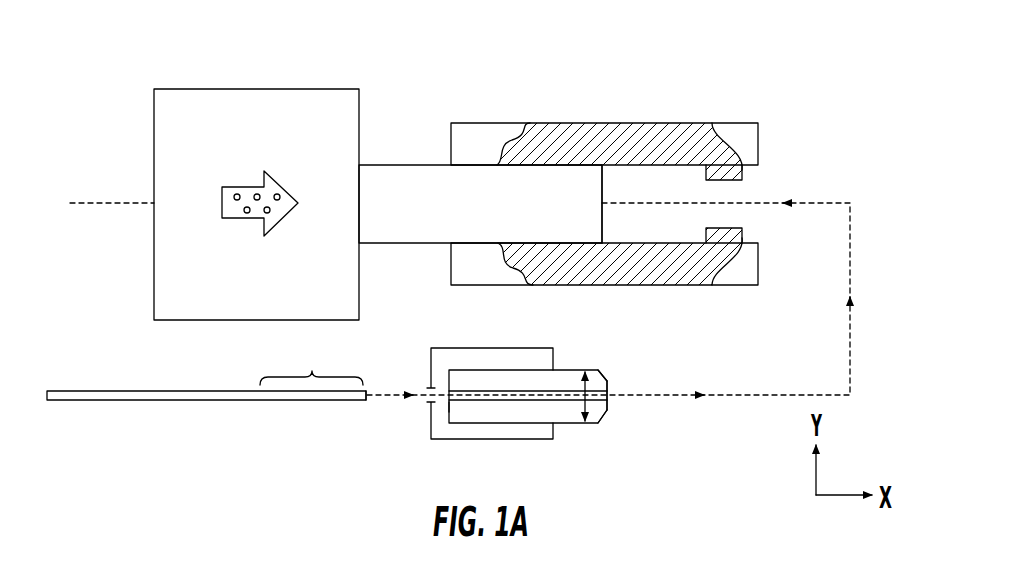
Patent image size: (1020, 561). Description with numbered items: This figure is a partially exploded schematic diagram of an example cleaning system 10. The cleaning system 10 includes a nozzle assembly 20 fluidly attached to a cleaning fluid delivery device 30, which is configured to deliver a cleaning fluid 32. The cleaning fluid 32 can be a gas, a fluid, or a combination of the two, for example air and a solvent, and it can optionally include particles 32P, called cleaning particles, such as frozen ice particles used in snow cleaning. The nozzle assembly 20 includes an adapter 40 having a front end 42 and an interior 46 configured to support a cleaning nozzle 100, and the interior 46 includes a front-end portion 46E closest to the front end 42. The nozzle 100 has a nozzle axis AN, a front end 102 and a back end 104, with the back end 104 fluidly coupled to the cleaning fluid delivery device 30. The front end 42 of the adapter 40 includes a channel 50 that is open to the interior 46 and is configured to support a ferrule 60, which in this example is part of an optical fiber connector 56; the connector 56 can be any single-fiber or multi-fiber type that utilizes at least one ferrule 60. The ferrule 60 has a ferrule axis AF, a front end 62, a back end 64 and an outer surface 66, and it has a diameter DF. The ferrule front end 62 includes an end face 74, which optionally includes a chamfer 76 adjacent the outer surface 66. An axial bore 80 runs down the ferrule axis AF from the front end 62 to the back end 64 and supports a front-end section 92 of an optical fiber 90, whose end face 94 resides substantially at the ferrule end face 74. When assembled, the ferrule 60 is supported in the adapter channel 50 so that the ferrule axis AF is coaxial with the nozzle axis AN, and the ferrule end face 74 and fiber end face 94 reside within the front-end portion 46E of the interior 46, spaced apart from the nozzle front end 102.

The cleaning system 10 is at (134, 44).
The nozzle assembly 20 is at (508, 55).
The cleaning fluid delivery device 30 is at (248, 90).
The cleaning fluid 32 is at (242, 187).
The particles 32P is at (246, 213).
The adapter 40 is at (517, 123).
The front end 42 is at (760, 135).
The interior 46 is at (643, 183).
The front-end portion 46E is at (666, 230).
The channel 50 is at (745, 192).
The optical fiber connector 56 is at (468, 347).
The ferrule 60 is at (517, 361).
The front end 62 is at (617, 383).
The back end 64 is at (449, 412).
The outer surface 66 is at (532, 440).
The end face 74 is at (605, 417).
The chamfer 76 is at (598, 371).
The axial bore 80 is at (498, 401).
The optical fiber 90 is at (153, 401).
The front-end section 92 is at (311, 359).
The end face 94 is at (367, 389).
The cleaning nozzle 100 is at (432, 180).
The front end 102 is at (602, 183).
The back end 104 is at (359, 227).
The nozzle axis AN is at (670, 203).
The ferrule axis AF is at (631, 397).
The diameter DF is at (572, 379).